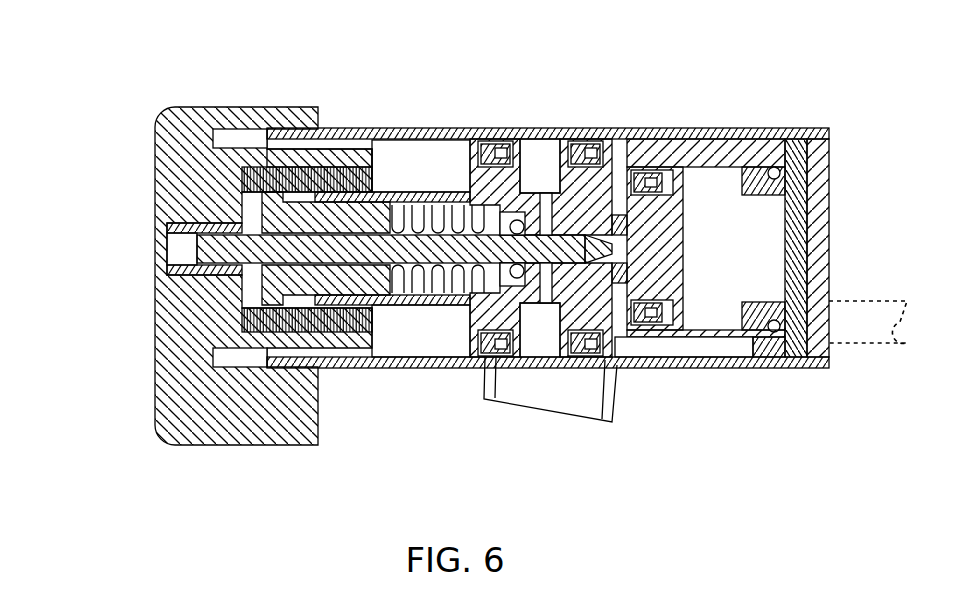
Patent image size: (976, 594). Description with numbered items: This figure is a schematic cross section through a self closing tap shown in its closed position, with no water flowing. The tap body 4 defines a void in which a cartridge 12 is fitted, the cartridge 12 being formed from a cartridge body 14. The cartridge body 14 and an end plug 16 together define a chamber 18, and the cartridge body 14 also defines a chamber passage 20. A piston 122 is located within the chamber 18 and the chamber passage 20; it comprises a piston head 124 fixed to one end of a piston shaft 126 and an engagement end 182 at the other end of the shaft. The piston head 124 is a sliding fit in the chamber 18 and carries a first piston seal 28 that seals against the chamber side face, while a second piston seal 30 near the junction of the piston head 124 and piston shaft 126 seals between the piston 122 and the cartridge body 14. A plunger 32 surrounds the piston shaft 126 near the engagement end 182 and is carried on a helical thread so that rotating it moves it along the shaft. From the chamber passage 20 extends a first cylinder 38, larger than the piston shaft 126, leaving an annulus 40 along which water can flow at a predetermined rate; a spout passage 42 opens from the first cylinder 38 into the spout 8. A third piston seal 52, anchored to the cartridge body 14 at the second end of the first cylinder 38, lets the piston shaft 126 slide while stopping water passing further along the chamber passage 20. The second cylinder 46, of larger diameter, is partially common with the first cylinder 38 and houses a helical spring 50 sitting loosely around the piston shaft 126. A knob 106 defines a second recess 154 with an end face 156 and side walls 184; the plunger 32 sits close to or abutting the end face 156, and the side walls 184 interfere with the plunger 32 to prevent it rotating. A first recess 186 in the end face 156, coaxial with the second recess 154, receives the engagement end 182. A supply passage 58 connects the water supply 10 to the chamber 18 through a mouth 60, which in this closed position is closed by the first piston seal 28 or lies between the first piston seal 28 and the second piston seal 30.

The tap body 4 is at (330, 367).
The spout 8 is at (490, 380).
The water supply 10 is at (878, 300).
The cartridge 12 is at (690, 154).
The cartridge body 14 is at (450, 128).
The end plug 16 is at (797, 195).
The chamber 18 is at (800, 160).
The chamber passage 20 is at (392, 305).
The first piston seal 28 is at (690, 345).
The second piston seal 30 is at (600, 150).
The plunger 32 is at (278, 160).
The first cylinder 38 is at (506, 150).
The annulus 40 is at (548, 150).
The spout passage 42 is at (546, 330).
The second cylinder 46 is at (470, 300).
The helical spring 50 is at (430, 305).
The third piston seal 52 is at (497, 212).
The supply passage 58 is at (660, 345).
The mouth 60 is at (630, 362).
The knob 106 is at (155, 133).
The piston 122 is at (330, 249).
The piston head 124 is at (660, 232).
The piston shaft 126 is at (395, 190).
The second recess 154 is at (247, 312).
The end face 156 is at (262, 290).
The engagement end 182 is at (160, 228).
The side walls 184 is at (270, 325).
The first recess 186 is at (175, 245).